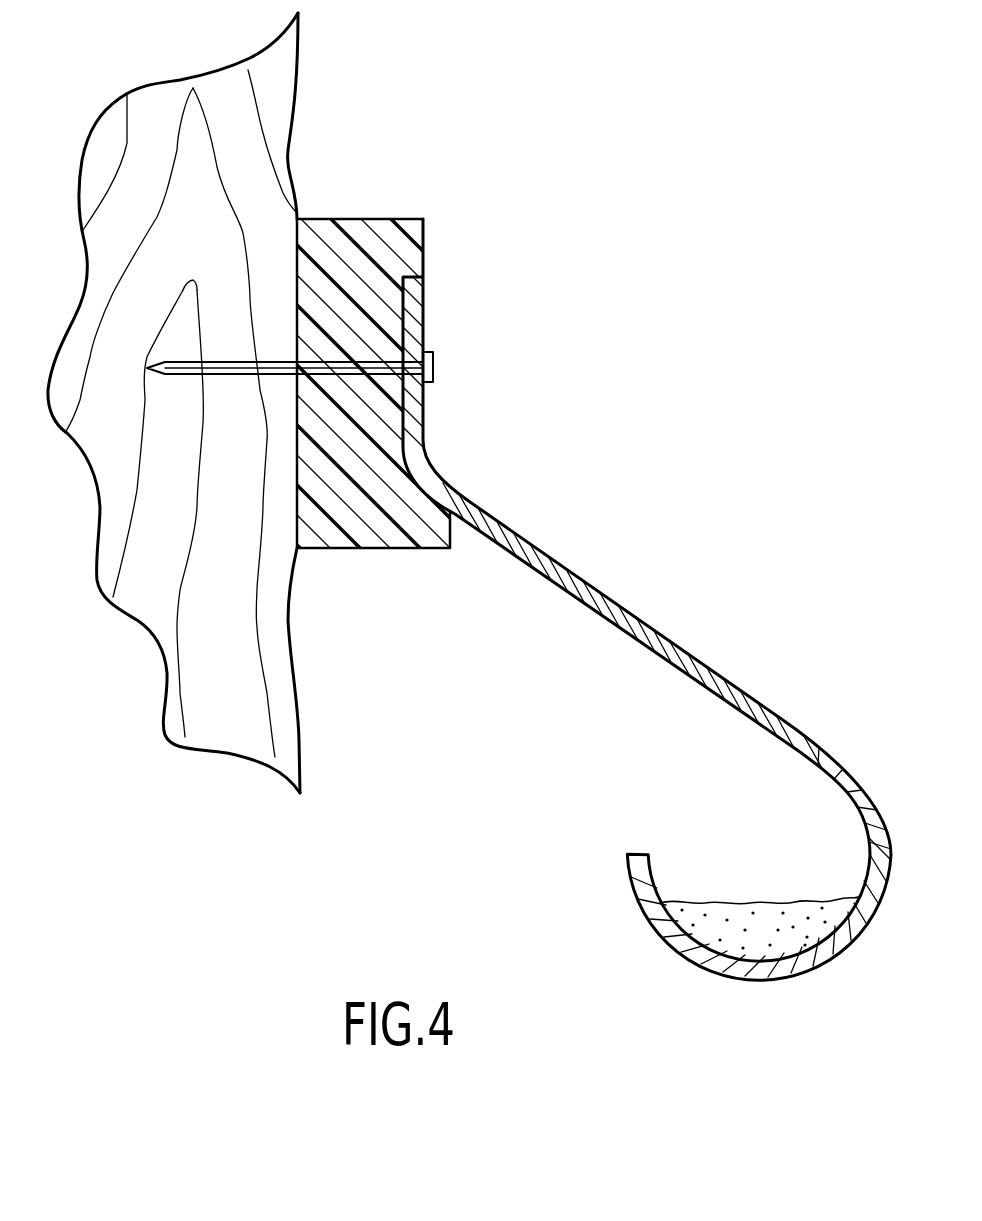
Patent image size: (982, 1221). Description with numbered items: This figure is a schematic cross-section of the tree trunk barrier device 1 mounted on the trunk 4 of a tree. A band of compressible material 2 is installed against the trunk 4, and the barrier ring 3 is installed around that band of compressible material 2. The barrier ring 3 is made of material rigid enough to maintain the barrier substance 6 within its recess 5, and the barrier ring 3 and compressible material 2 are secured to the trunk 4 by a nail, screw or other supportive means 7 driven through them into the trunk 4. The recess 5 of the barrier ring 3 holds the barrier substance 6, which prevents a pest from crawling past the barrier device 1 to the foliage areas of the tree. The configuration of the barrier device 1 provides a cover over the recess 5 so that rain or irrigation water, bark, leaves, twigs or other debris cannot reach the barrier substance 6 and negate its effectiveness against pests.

The barrier device 1 is at (594, 599).
The compressible material 2 is at (350, 498).
The barrier ring 3 is at (426, 295).
The trunk 4 is at (122, 150).
The recess 5 is at (751, 862).
The barrier substance 6 is at (750, 930).
The supportive means 7 is at (433, 366).